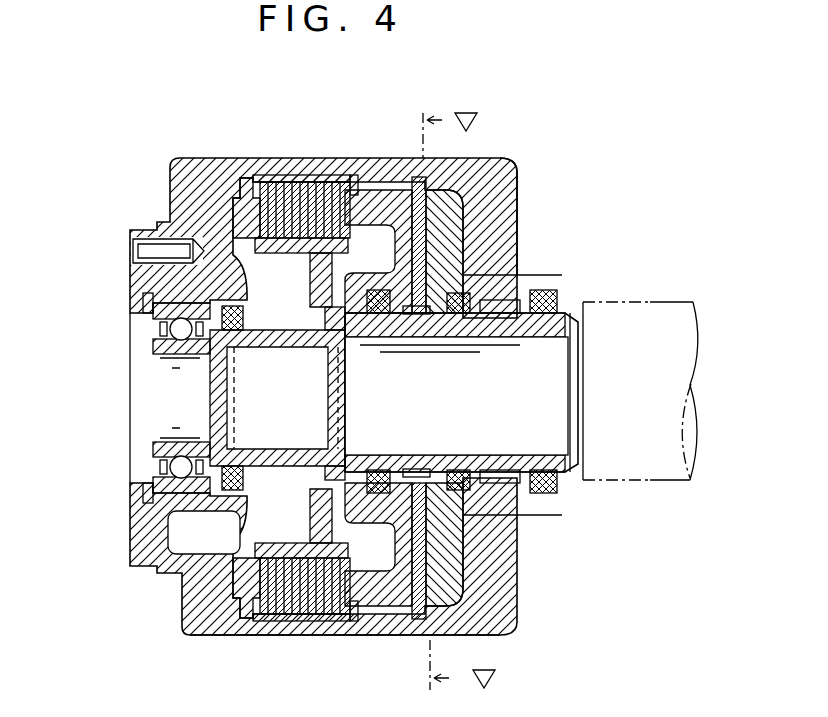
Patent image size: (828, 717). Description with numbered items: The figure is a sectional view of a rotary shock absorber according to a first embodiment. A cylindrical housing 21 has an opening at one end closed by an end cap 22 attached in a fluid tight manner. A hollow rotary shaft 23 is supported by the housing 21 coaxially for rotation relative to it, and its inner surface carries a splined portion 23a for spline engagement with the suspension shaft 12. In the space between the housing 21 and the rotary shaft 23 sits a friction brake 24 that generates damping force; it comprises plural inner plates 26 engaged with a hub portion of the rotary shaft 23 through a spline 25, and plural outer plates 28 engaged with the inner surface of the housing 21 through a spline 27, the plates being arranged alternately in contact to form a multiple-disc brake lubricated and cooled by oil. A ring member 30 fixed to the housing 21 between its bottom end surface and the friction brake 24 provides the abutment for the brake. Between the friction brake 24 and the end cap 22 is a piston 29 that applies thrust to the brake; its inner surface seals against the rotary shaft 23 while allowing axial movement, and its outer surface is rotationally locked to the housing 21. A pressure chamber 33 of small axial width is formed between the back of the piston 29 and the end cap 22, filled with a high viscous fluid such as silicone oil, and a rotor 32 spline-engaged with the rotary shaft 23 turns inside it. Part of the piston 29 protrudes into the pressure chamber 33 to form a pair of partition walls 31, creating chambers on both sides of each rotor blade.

The suspension shaft 12 is at (672, 300).
The cylindrical housing 21 is at (327, 627).
The end cap 22 is at (460, 557).
The hollow rotary shaft 23 is at (545, 440).
The splined portion 23a is at (253, 440).
The friction brake 24 is at (294, 172).
The spline 25 is at (230, 242).
The inner plates 26 is at (240, 225).
The spline 27 is at (357, 182).
The outer plates 28 is at (343, 185).
The piston 29 is at (390, 580).
The ring member 30 is at (247, 580).
The partition walls 31 is at (423, 587).
The rotor 32 is at (425, 226).
The pressure chamber 33 is at (477, 152).